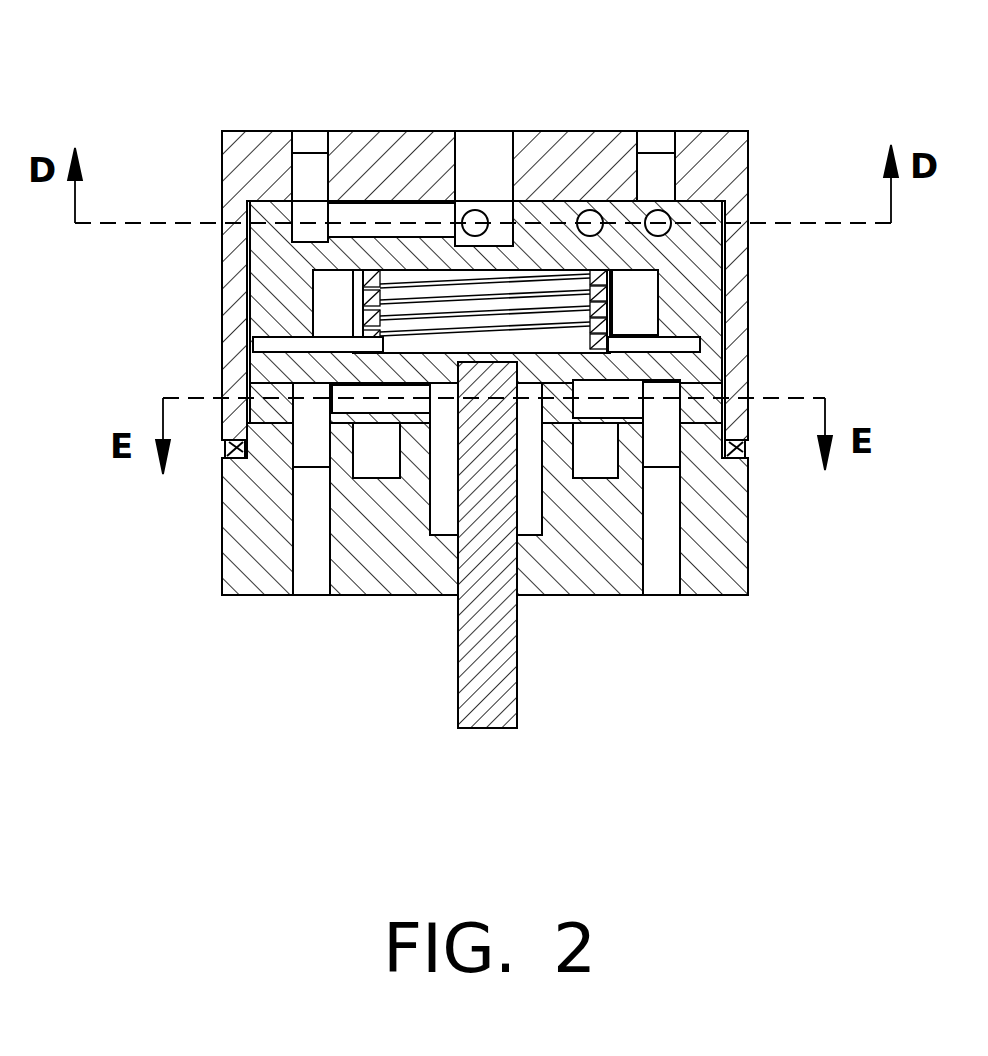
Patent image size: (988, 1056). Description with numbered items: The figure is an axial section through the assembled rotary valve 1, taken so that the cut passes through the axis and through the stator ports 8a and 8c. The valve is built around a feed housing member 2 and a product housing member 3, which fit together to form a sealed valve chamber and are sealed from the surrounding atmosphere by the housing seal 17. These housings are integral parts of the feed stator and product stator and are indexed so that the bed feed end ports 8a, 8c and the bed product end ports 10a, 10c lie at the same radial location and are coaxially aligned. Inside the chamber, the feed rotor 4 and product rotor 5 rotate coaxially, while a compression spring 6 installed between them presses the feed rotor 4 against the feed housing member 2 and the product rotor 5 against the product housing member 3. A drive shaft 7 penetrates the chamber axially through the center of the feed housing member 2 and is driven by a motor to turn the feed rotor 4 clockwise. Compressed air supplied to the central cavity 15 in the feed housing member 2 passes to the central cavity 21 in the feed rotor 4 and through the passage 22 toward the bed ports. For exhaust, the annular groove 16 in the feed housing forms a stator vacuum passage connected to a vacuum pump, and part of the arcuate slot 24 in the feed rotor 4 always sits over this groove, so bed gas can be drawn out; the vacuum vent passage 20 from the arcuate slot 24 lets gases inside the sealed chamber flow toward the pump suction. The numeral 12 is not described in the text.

The rotary valve 1 is at (198, 62).
The feed housing member 2 is at (222, 577).
The product housing member 3 is at (748, 140).
The feed rotor 4 is at (690, 340).
The product rotor 5 is at (270, 208).
The compression spring 6 is at (660, 300).
The drive shaft 7 is at (484, 730).
The bed feed end port 8a is at (673, 595).
The bed feed end port 8c is at (308, 596).
The bed product end port 10a is at (652, 131).
The bed product end port 10c is at (303, 131).
The fastening bolt 12 is at (488, 131).
The central cavity 15 is at (528, 412).
The annular groove 16 is at (378, 457).
The housing seal 17 is at (225, 452).
The vacuum vent passage 20 is at (740, 387).
The central cavity 21 is at (540, 392).
The passage 22 is at (262, 368).
The arcuate slot 24 is at (615, 412).